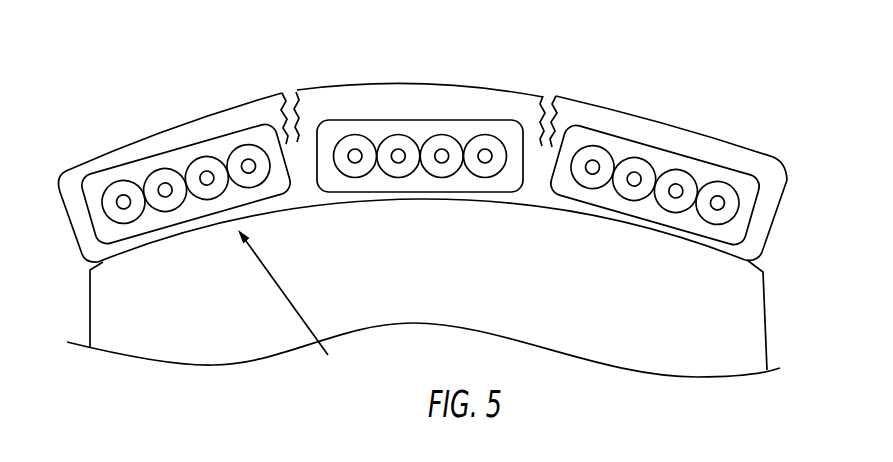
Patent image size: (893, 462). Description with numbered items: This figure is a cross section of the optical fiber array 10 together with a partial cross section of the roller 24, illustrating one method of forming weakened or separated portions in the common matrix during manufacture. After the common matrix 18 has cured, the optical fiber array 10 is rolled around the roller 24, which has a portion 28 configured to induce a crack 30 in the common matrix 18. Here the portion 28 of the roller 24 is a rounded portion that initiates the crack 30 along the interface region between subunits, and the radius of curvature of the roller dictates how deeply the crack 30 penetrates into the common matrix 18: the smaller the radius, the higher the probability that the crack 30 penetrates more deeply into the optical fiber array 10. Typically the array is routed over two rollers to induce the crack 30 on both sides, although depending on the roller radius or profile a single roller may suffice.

The optical fiber array 10 is at (642, 85).
The common matrix 18 is at (422, 82).
The roller 24 is at (90, 307).
The portion 28 is at (684, 239).
The crack 30 is at (285, 90).